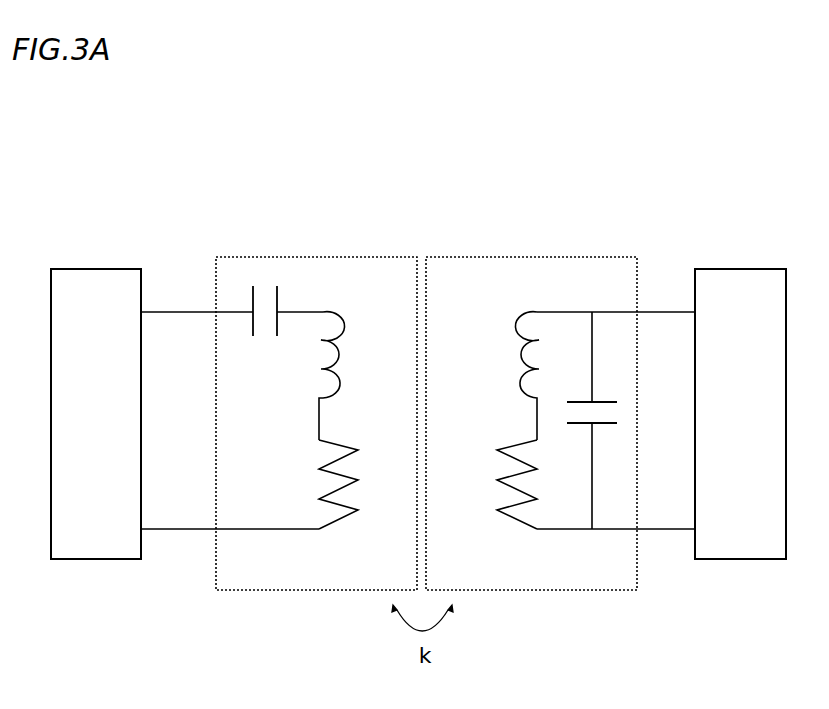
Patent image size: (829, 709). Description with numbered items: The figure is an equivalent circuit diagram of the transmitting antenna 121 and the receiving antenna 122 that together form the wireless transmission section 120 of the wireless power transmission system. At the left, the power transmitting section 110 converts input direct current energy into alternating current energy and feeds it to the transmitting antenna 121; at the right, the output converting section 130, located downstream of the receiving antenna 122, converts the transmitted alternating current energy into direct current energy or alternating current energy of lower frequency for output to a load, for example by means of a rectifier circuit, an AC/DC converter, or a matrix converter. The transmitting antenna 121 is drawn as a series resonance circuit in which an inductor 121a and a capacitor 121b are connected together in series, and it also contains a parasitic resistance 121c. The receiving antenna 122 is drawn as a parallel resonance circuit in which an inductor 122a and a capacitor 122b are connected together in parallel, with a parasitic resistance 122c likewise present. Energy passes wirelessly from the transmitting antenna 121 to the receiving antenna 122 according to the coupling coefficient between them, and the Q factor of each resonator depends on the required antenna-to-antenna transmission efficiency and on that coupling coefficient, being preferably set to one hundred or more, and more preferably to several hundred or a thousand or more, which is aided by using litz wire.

The power transmitting section 110 is at (96, 414).
The output converting section 130 is at (740, 414).
The wireless transmission section 120 is at (367, 105).
The transmitting antenna 121 is at (393, 260).
The receiving antenna 122 is at (460, 260).
The inductor 121a is at (331, 312).
The capacitor 121b is at (252, 292).
The parasitic resistance 121c is at (332, 527).
The inductor 122a is at (521, 314).
The capacitor 122b is at (600, 430).
The parasitic resistance 122c is at (505, 518).